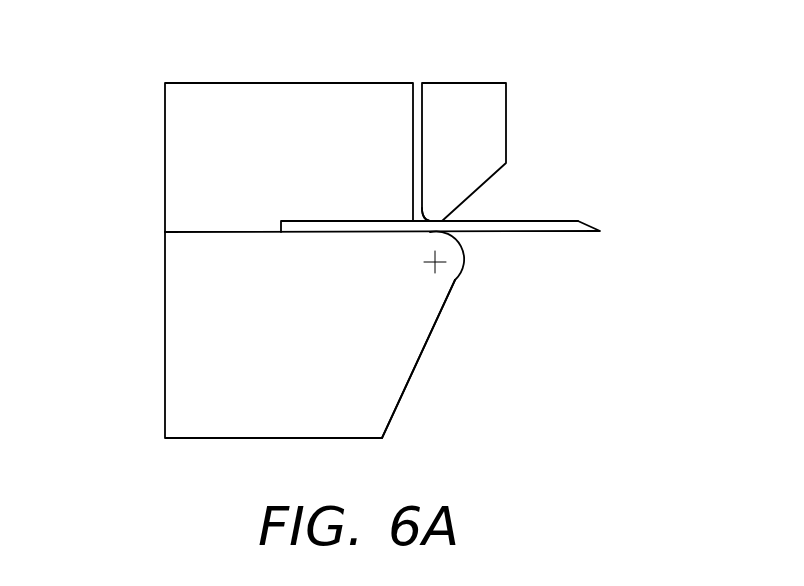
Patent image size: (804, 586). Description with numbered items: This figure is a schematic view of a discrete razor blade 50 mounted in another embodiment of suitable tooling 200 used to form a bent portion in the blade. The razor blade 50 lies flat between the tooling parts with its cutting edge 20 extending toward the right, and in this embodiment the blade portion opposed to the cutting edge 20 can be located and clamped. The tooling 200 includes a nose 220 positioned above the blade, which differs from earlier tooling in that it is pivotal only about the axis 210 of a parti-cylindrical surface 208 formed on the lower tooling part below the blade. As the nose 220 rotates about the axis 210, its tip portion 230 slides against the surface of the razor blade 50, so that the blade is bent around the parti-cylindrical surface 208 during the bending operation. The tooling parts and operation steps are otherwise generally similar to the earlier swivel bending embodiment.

The tooling 200 is at (163, 60).
The nose 220 is at (506, 131).
The cutting edge 20 is at (603, 227).
The razor blade 50 is at (548, 218).
The tip portion 230 is at (443, 213).
The parti-cylindrical surface 208 is at (462, 249).
The axis 210 is at (454, 282).